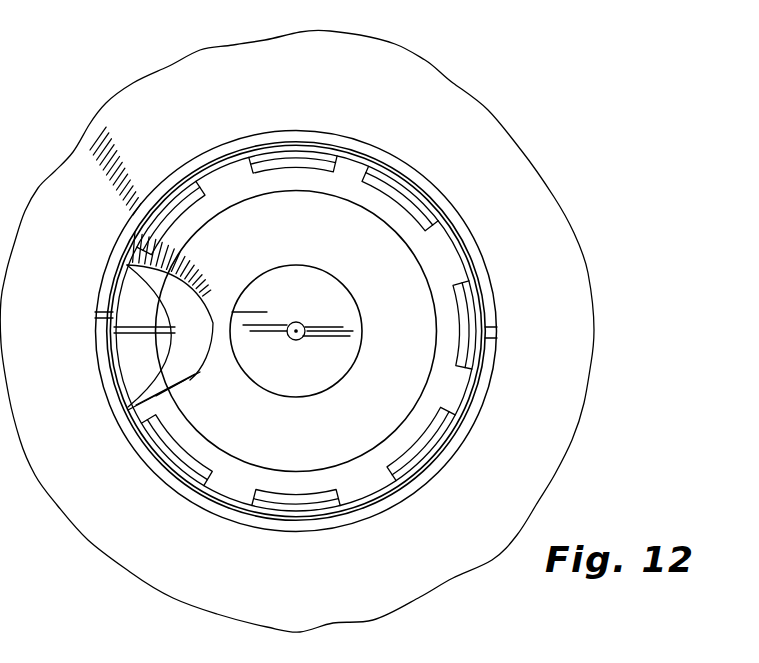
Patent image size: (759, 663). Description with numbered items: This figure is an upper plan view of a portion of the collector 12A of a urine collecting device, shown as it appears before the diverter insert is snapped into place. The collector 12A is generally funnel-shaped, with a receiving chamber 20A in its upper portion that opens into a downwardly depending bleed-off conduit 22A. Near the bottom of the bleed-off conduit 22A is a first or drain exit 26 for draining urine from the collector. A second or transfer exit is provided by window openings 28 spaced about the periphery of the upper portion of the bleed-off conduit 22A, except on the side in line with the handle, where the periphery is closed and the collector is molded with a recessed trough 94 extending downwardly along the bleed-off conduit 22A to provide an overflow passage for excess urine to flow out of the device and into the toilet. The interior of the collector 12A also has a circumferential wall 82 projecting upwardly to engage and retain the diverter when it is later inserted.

The collector 12A is at (553, 197).
The stone surface 20A is at (481, 127).
The bleed-off conduit 22A is at (497, 305).
The circumferential wall 82 is at (373, 150).
The window openings 28 is at (410, 207).
The drain exit 26 is at (288, 337).
The recessed trough 94 is at (192, 348).